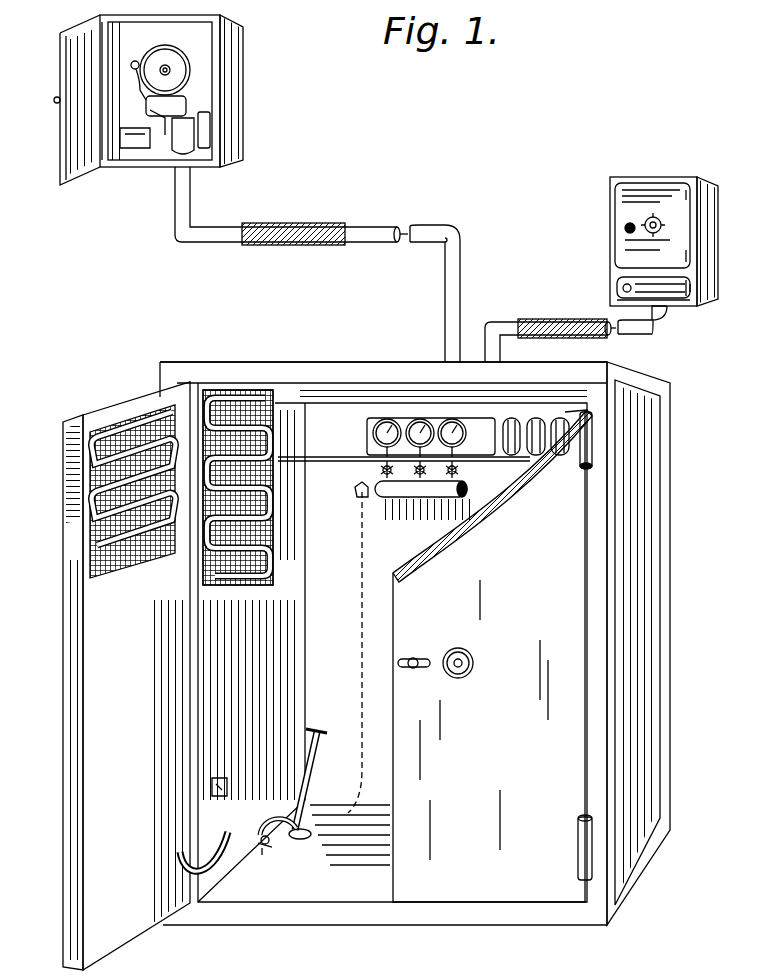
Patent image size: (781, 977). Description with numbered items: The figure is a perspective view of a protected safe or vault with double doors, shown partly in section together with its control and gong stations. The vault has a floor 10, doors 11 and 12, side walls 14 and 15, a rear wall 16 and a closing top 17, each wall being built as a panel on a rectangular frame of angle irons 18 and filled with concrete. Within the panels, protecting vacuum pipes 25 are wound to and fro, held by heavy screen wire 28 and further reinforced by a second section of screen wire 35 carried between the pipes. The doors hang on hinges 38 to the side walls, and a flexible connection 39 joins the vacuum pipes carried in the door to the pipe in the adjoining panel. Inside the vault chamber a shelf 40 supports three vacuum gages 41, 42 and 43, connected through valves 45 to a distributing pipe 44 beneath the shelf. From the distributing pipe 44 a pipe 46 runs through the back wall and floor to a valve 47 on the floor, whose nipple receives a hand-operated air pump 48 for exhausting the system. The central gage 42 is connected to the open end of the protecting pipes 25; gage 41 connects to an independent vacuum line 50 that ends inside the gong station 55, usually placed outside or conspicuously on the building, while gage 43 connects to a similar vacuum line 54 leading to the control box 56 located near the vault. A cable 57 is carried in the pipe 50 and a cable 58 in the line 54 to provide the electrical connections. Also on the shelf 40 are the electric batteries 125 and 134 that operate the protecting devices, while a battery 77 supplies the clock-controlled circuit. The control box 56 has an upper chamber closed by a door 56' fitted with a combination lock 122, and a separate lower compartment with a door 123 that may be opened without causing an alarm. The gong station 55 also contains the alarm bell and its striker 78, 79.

The floor of vault 10 is at (345, 930).
The door 11 is at (63, 780).
The door 12 is at (492, 656).
The side wall 14 is at (650, 655).
The side wall 15 is at (249, 659).
The rear wall 16 is at (343, 652).
The top 17 is at (375, 366).
The angle irons 18 is at (670, 532).
The pipes 25 is at (95, 575).
The heavy screen wire 28 is at (207, 582).
The second section of screen wire 35 is at (150, 580).
The hinges 38 is at (592, 437).
The flexible connection 39 is at (180, 852).
The shelf 40 is at (330, 457).
The vacuum gage 41 is at (392, 418).
The vacuum gage 42 is at (424, 418).
The vacuum gage 43 is at (454, 418).
The distributing pipe 44 is at (406, 500).
The valves 45 is at (460, 476).
The pipe 46 is at (357, 492).
The valve 47 is at (263, 850).
The air pump 48 is at (309, 771).
The vacuum line 50 is at (378, 235).
The vacuum line 54 is at (593, 336).
The gong station 55 is at (240, 93).
The control box 56 is at (680, 241).
The door of control box 56' is at (638, 225).
The cable 57 is at (299, 245).
The cable 58 is at (557, 320).
The battery 77 is at (212, 137).
The alarm bell 78 is at (185, 62).
The bell striker 79 is at (131, 66).
The combination lock 122 is at (652, 234).
The door 123 is at (675, 292).
The electric battery 125 is at (515, 420).
The electric battery 134 is at (570, 414).